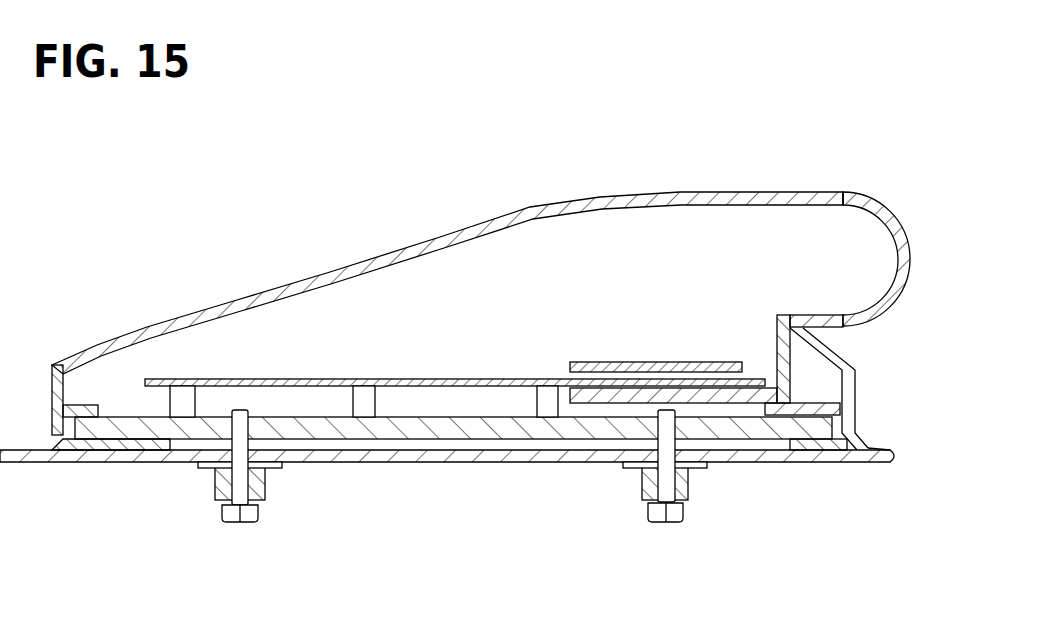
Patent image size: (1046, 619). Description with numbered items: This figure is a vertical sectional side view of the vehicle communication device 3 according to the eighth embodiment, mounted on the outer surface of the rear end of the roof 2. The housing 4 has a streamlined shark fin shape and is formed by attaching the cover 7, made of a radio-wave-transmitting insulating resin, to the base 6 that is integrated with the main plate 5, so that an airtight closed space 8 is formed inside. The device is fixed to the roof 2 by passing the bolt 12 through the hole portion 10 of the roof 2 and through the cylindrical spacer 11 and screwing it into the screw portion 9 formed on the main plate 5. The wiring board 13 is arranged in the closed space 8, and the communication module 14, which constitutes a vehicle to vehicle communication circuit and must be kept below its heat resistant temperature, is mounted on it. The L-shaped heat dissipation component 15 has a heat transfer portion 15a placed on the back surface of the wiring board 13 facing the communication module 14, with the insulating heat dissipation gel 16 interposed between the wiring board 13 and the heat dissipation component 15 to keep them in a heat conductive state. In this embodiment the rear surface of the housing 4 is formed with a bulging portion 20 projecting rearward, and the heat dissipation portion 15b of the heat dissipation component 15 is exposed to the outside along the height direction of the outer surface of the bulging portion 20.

The roof 2 is at (818, 465).
The vehicle communication device 3 is at (473, 176).
The housing 4 is at (652, 192).
The main plate 5 is at (445, 440).
The base 6 is at (867, 440).
The cover 7 is at (860, 385).
The closed space 8 is at (488, 296).
The screw portion 9 is at (250, 433).
The hole portion 10 is at (263, 493).
The cylindrical spacer 11 is at (213, 482).
The bolt 12 is at (243, 522).
The wiring board 13 is at (408, 379).
The communication module 14 is at (650, 362).
The heat dissipation component 15 is at (703, 403).
The heat transfer portion 15a is at (590, 403).
The heat dissipation portion 15b is at (860, 192).
The heat dissipation gel 16 is at (560, 388).
The bulging portion 20 is at (892, 240).